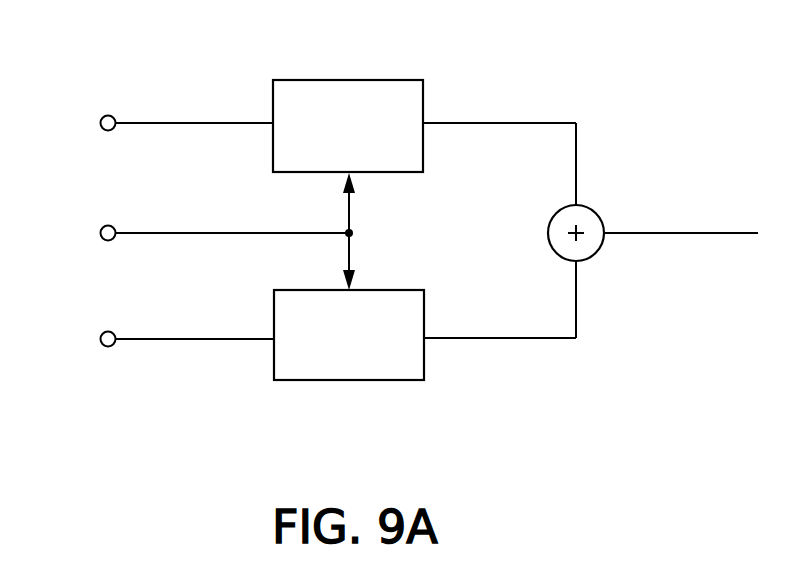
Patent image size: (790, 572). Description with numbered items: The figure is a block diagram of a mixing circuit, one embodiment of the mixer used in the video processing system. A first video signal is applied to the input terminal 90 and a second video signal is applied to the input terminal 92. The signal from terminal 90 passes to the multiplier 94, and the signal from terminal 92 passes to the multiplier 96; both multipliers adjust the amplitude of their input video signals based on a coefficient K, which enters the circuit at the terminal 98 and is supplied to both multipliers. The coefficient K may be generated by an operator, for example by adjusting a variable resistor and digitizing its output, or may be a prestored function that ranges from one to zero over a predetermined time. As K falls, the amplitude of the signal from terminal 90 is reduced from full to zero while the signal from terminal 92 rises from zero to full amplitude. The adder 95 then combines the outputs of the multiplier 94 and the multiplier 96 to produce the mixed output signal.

The input terminal 90 is at (100, 103).
The input terminal 92 is at (108, 318).
The multiplier 94 is at (350, 80).
The adder 95 is at (590, 208).
The multiplier 96 is at (366, 381).
The control input K 98 is at (100, 206).